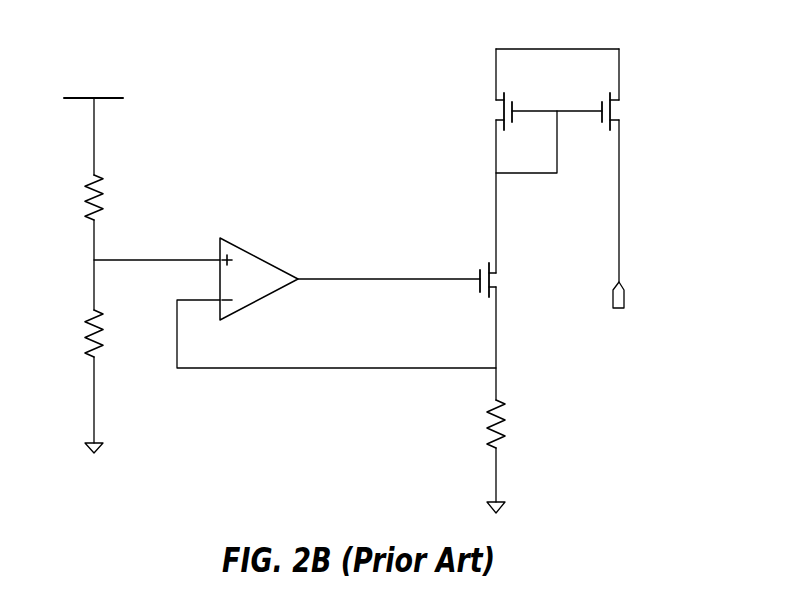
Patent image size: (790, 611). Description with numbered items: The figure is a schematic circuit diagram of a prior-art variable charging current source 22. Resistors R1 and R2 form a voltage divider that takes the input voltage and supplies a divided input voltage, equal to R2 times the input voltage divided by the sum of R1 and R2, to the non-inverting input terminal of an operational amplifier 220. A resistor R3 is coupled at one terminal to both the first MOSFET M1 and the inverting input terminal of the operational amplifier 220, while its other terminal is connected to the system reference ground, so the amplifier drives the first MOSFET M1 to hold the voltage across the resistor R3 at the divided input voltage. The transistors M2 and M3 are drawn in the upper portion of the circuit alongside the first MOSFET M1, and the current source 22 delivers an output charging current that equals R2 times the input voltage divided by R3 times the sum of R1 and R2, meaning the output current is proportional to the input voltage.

The variable charging current source 22 is at (356, 281).
The operational amplifier 220 is at (262, 298).
The resistor R1 is at (74, 197).
The resistor R2 is at (74, 333).
The resistor R3 is at (514, 424).
The first MOSFET M1 is at (506, 280).
The MOSFET M2 is at (487, 111).
The MOSFET M3 is at (628, 111).